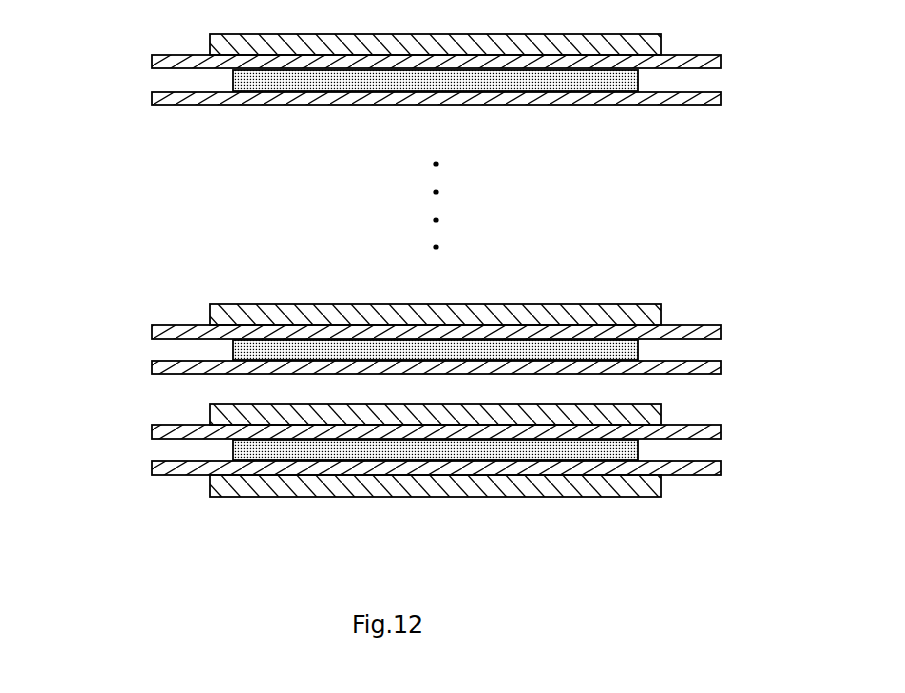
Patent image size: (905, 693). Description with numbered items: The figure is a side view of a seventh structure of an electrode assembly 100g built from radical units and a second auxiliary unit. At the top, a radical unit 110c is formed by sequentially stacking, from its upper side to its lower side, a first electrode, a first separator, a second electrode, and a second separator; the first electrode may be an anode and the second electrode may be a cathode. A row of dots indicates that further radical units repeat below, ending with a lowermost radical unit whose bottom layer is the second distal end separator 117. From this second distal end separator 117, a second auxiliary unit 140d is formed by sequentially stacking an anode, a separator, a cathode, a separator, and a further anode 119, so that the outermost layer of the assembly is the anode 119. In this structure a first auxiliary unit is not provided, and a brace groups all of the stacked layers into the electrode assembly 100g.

The electrode assembly 100g is at (723, 35).
The radical unit 110c is at (78, 34).
The second auxiliary unit 140d is at (78, 404).
The second distal end separator 117 is at (156, 368).
The anode 119 is at (240, 485).